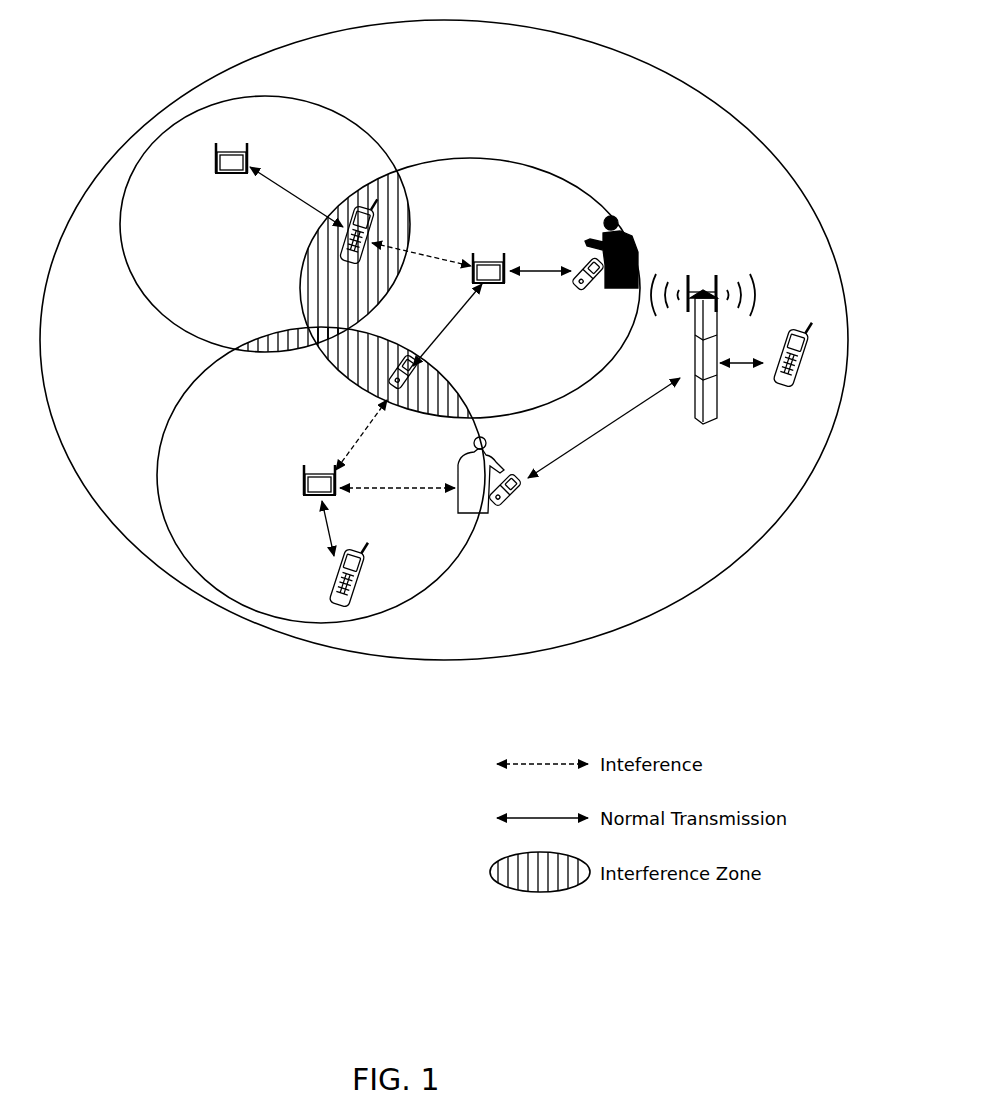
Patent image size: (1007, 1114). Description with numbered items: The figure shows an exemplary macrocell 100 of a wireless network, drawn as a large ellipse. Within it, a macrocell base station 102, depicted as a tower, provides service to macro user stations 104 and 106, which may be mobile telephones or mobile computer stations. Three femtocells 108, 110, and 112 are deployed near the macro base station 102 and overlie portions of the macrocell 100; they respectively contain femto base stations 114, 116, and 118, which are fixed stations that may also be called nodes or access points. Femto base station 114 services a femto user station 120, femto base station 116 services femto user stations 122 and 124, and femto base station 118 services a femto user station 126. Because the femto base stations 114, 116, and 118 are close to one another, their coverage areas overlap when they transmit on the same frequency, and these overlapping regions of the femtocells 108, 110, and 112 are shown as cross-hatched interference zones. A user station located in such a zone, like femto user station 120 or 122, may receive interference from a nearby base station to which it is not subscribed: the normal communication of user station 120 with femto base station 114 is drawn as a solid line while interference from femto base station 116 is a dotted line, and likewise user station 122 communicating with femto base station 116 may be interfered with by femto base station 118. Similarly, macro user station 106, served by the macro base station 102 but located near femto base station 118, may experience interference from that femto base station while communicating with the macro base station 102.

The macrocell 100 is at (645, 63).
The macrocell base station 102 is at (697, 427).
The user station 104 is at (773, 368).
The user station 106 is at (505, 466).
The femtocell 108 is at (305, 97).
The femtocell 110 is at (559, 179).
The femtocell 112 is at (169, 403).
The femto base station 114 is at (251, 157).
The femto base station 116 is at (486, 260).
The femto base station 118 is at (298, 478).
The femto user station 120 is at (351, 265).
The femto user station 122 is at (406, 353).
The femto user station 124 is at (629, 238).
The femto user station 126 is at (328, 584).